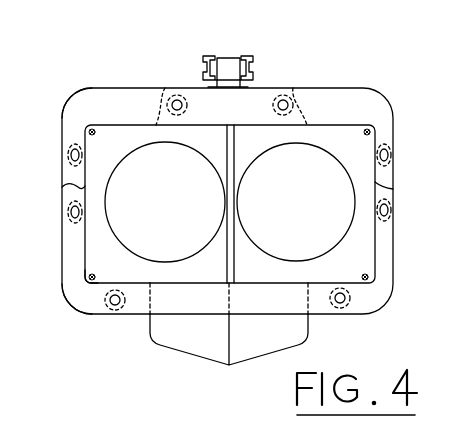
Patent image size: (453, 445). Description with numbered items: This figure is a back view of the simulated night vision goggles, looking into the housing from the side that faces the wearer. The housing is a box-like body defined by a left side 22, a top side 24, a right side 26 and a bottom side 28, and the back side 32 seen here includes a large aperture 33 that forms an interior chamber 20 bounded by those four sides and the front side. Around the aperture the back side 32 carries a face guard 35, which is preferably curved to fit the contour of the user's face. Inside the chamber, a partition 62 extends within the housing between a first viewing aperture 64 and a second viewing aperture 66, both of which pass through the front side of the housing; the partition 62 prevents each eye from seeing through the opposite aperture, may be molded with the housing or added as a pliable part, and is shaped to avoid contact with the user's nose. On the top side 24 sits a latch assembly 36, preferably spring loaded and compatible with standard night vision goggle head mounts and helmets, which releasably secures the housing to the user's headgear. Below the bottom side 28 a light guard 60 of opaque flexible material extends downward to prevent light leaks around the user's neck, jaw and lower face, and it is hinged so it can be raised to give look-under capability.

The interior chamber 20 is at (360, 253).
The left side 22 is at (393, 189).
The top side 24 is at (324, 123).
The right side 26 is at (62, 187).
The bottom side 28 is at (142, 314).
The back side 32 is at (78, 292).
The large aperture 33 is at (86, 264).
The face guard 35 is at (72, 91).
The latch assembly 36 is at (232, 54).
The light guard 60 is at (195, 337).
The partition 62 is at (226, 248).
The first viewing aperture 64 is at (306, 214).
The second viewing aperture 66 is at (174, 214).